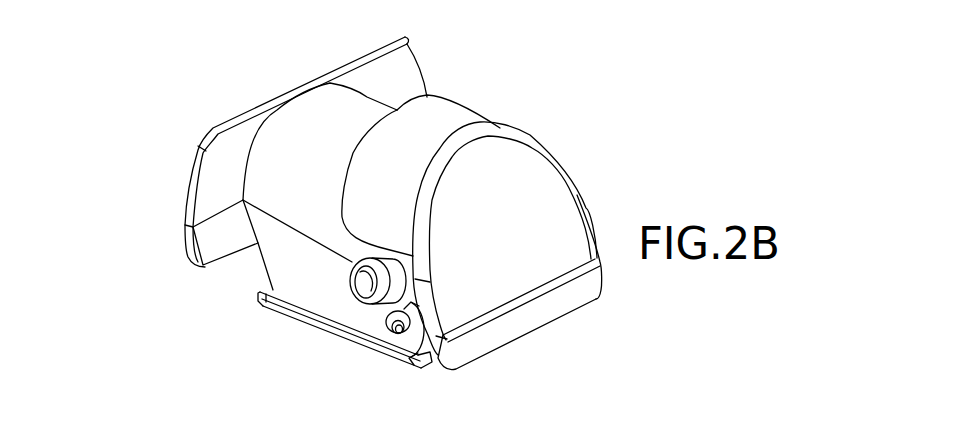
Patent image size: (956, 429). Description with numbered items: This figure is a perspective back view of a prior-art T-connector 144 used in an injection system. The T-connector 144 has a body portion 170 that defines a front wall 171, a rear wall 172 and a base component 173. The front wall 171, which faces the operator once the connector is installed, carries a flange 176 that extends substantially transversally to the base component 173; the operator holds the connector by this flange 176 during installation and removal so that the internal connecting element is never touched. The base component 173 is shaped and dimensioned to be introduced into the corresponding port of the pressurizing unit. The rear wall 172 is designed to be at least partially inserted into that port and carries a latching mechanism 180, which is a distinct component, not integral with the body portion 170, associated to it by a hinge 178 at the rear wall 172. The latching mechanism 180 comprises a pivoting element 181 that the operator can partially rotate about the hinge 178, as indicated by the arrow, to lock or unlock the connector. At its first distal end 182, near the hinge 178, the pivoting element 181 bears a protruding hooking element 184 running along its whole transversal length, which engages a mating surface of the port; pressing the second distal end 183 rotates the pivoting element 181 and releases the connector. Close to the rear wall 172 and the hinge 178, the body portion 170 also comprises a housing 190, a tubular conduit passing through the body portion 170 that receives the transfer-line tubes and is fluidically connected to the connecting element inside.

The T-connector 144 is at (438, 209).
The body portion 170 is at (406, 155).
The front wall 171 is at (189, 271).
The rear wall 172 is at (511, 383).
The base component 173 is at (295, 348).
The flange 176 is at (232, 152).
The hinge 178 is at (336, 360).
The latching mechanism 180 is at (569, 217).
The pivoting element 181 is at (512, 211).
The first distal end 182 is at (455, 352).
The second distal end 183 is at (440, 103).
The hooking element 184 is at (525, 344).
The housing 190 is at (303, 308).